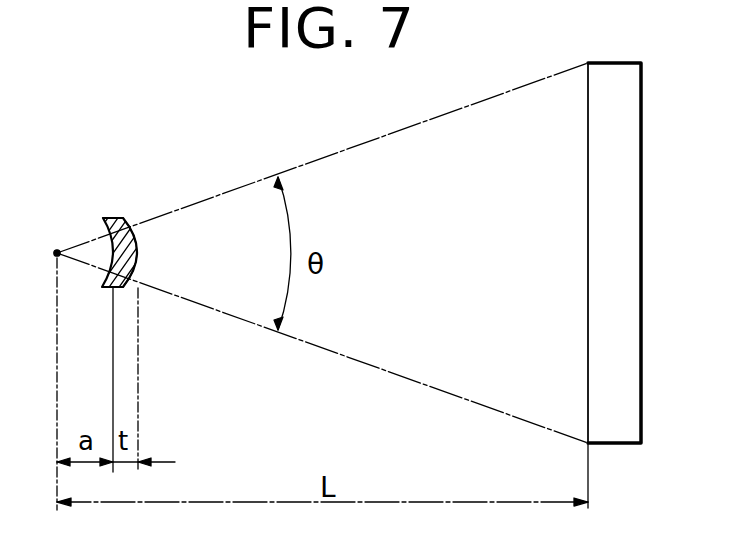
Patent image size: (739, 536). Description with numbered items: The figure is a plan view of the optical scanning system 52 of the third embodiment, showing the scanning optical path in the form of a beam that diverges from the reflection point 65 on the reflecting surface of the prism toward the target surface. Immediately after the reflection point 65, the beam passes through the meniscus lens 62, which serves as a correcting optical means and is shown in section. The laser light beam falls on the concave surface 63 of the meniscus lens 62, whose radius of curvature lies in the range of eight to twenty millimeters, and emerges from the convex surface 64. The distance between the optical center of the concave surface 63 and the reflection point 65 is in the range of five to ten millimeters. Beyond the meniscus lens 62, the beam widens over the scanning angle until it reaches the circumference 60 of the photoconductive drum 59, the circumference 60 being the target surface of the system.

The optical scanning system 52 is at (205, 188).
The photoconductive drum 59 is at (641, 110).
The circumference 60 is at (588, 217).
The meniscus lens 62 is at (116, 217).
The concave surface 63 is at (106, 229).
The convex surface 64 is at (140, 245).
The reflection point 65 is at (57, 249).